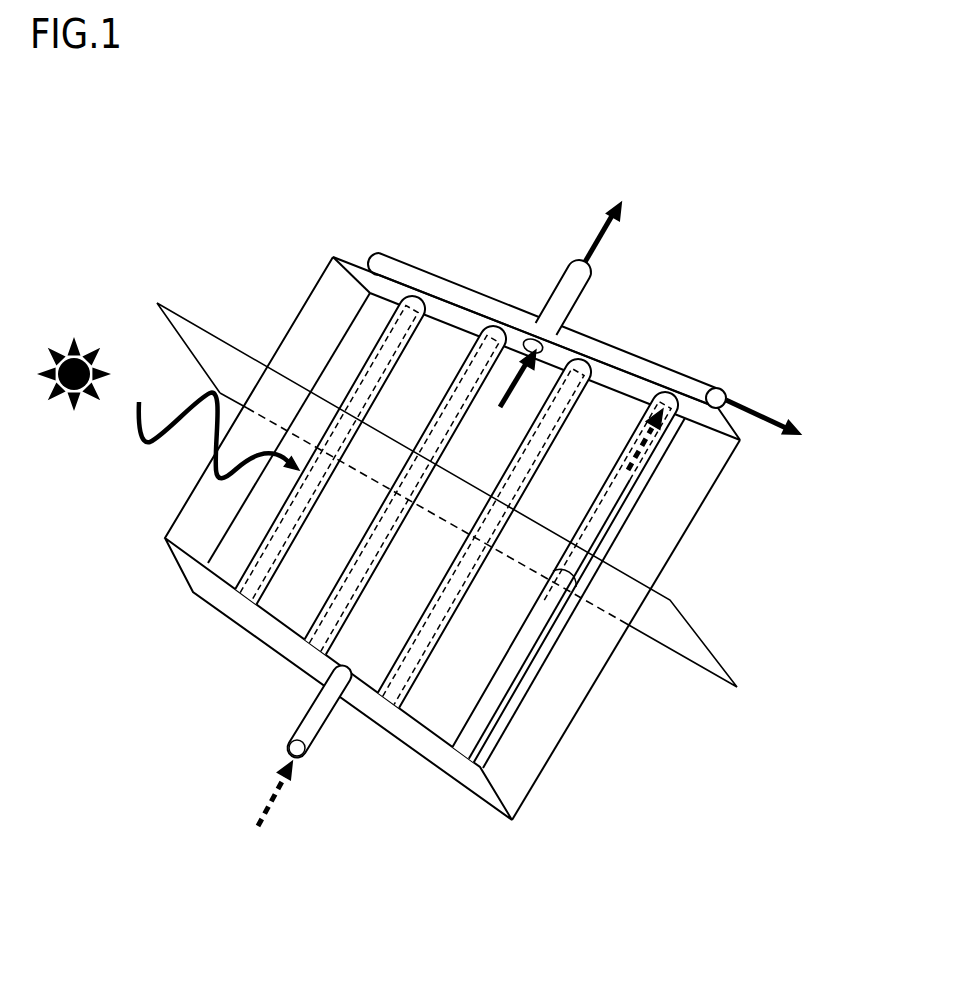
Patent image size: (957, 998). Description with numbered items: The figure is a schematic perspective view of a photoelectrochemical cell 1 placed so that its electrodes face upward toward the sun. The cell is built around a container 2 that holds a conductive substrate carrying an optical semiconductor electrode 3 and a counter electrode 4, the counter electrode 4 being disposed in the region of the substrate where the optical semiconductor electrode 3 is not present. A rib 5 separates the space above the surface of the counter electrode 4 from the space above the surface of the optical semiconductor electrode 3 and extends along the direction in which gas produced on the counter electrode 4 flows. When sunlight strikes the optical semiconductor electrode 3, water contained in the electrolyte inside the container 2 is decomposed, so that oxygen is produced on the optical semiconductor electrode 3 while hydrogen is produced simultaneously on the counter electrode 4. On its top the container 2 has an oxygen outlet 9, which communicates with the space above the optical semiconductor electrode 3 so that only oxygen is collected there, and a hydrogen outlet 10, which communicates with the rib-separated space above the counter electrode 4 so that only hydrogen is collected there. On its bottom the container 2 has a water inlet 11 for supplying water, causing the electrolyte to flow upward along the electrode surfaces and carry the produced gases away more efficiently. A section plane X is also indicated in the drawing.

The photoelectrochemical cell 1 is at (612, 154).
The container 2 is at (700, 470).
The optical semiconductor electrode 3 is at (350, 363).
The counter electrode 4 is at (393, 300).
The rib 5 is at (373, 360).
The oxygen outlet 9 is at (586, 274).
The hydrogen outlet 10 is at (730, 393).
The water inlet 11 is at (312, 733).
The section plane X is at (692, 627).